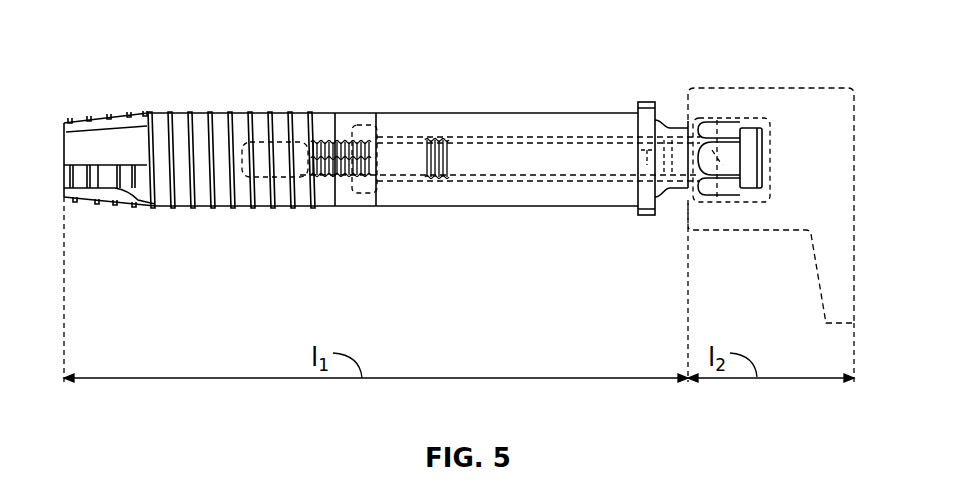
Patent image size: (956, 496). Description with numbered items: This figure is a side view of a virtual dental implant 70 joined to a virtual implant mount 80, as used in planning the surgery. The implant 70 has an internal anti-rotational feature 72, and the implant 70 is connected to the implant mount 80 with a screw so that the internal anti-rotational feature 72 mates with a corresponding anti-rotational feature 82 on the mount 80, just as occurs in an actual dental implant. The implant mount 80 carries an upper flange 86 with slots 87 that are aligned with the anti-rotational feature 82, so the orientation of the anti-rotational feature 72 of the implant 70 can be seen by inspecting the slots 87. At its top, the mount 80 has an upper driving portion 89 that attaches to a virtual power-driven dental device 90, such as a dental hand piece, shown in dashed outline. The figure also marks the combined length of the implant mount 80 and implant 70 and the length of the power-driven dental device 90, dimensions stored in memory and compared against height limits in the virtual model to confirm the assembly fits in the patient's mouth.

The virtual dental implant 70 is at (239, 113).
The internal anti-rotational feature 72 is at (370, 113).
The virtual implant mount 80 is at (550, 118).
The anti-rotational feature 82 is at (372, 161).
The upper flange 86 is at (638, 113).
The slots 87 is at (647, 162).
The upper driving portion 89 is at (753, 128).
The virtual power-driven dental device 90 is at (812, 88).